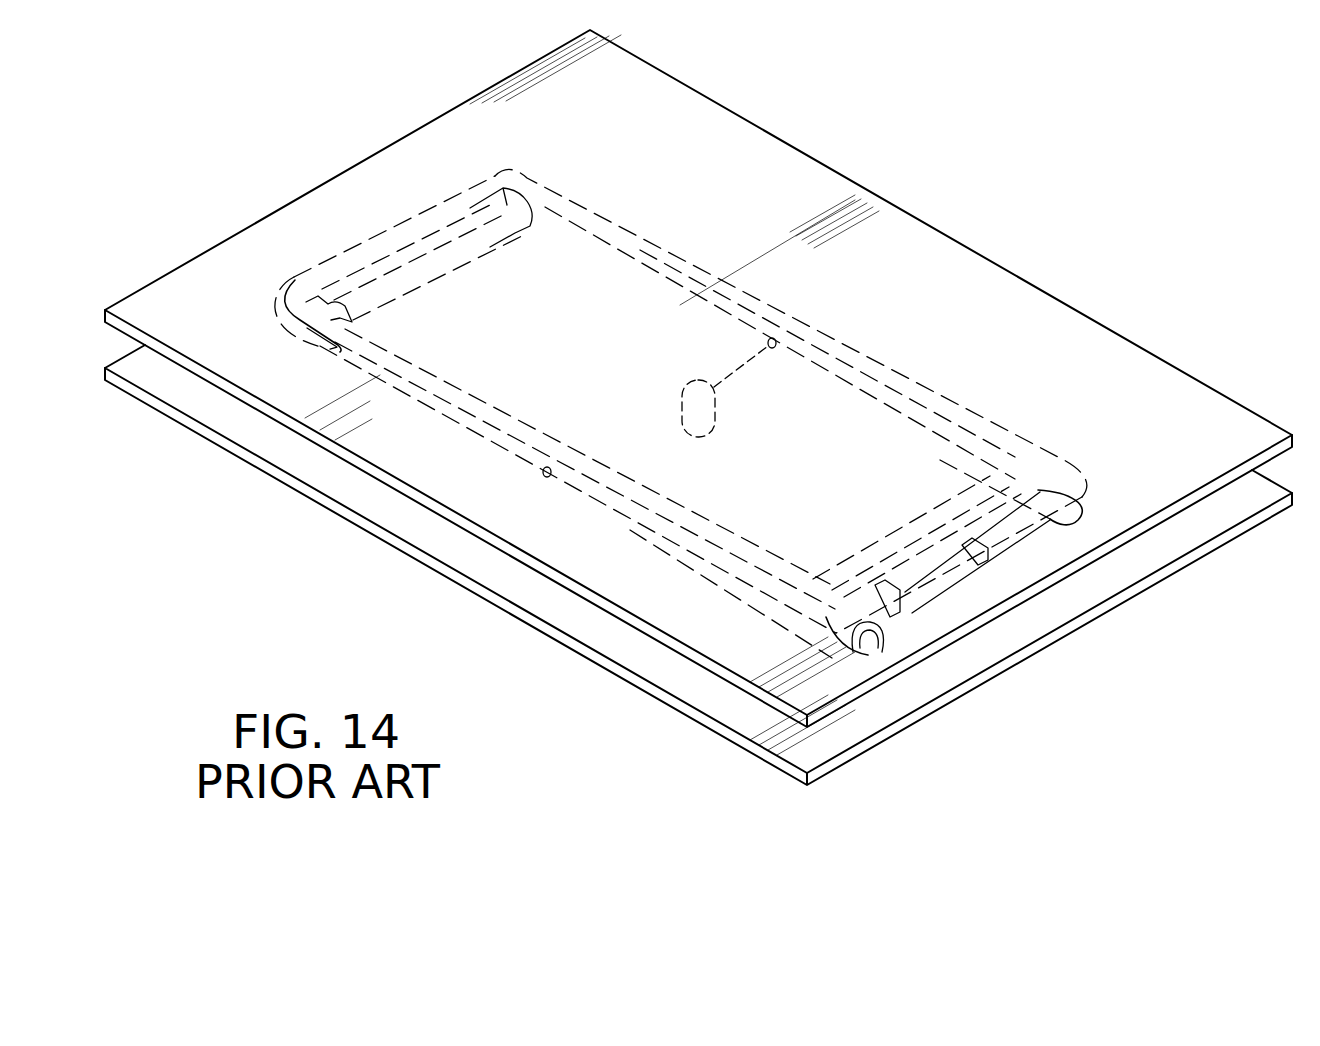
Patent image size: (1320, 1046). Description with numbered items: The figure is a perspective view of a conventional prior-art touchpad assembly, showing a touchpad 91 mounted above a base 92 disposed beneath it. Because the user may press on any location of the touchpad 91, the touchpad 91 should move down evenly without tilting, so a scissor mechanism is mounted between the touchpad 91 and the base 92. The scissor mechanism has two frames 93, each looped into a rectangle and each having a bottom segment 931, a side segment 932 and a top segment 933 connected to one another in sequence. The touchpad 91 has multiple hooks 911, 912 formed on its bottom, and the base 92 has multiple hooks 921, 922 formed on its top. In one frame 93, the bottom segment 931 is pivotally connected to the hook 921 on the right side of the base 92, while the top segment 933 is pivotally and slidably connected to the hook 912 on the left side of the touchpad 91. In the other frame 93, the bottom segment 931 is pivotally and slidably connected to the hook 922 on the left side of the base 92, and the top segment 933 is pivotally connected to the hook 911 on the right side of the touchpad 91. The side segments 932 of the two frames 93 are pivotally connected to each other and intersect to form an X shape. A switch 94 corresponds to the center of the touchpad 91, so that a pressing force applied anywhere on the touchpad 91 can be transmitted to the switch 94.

The touchpad 91 is at (952, 265).
The base 92 is at (697, 687).
The frame 93 is at (448, 432).
The switch 94 is at (776, 339).
The hook 911 is at (1010, 493).
The hook 912 is at (463, 190).
The hook 921 is at (917, 627).
The hook 922 is at (397, 290).
The bottom segment 931 is at (867, 640).
The side segment 932 is at (607, 507).
The top segment 933 is at (323, 253).